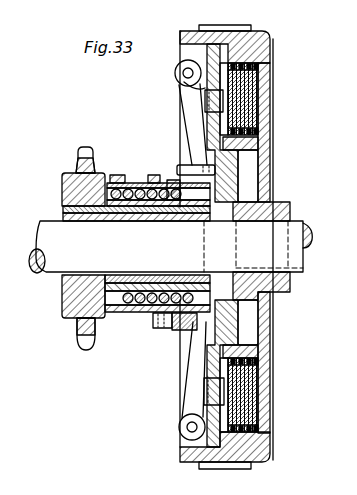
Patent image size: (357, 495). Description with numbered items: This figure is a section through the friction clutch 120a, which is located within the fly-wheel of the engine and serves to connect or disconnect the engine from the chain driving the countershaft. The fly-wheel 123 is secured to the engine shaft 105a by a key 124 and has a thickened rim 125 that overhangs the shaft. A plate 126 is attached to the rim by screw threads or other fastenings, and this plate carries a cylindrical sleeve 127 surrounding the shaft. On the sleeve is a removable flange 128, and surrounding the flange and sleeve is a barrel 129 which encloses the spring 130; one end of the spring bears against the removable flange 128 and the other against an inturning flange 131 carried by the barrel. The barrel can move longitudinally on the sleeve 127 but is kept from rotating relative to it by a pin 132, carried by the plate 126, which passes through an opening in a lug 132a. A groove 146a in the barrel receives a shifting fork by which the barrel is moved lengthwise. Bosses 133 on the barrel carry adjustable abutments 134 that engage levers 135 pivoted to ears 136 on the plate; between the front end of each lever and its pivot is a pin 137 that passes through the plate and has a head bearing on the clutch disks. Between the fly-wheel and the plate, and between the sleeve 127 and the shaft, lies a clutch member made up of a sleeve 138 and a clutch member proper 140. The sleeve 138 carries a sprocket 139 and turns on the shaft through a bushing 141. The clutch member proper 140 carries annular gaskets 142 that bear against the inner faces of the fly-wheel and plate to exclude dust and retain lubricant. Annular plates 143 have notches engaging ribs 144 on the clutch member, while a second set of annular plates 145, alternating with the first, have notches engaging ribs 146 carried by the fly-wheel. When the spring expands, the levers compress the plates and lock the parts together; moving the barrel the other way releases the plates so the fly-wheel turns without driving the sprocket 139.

The engine shaft 105a is at (148, 251).
The friction clutch 120a is at (189, 165).
The fly-wheel 123 is at (268, 408).
The key 124 is at (292, 281).
The thickened rim 125 is at (272, 33).
The plate 126 is at (182, 63).
The cylindrical sleeve 127 is at (130, 187).
The removable flange 128 is at (110, 315).
The barrel 129 is at (163, 187).
The spring 130 is at (82, 338).
The inturning flange 131 is at (215, 303).
The pin 132 is at (182, 168).
The lug 132a is at (213, 176).
The bosses 133 is at (170, 333).
The adjustable abutments 134 is at (163, 330).
The levers 135 is at (195, 320).
The ears 136 is at (176, 77).
The pin 137 is at (204, 392).
The sleeve 138 is at (62, 196).
The sprocket 139 is at (78, 164).
The clutch member proper 140 is at (240, 182).
The bushing 141 is at (62, 212).
The annular gaskets 142 is at (262, 141).
The annular plates 143 is at (270, 122).
The ribs 144 is at (266, 362).
The annular plates 145 is at (257, 82).
The ribs 146 is at (270, 62).
The groove 146a is at (110, 315).